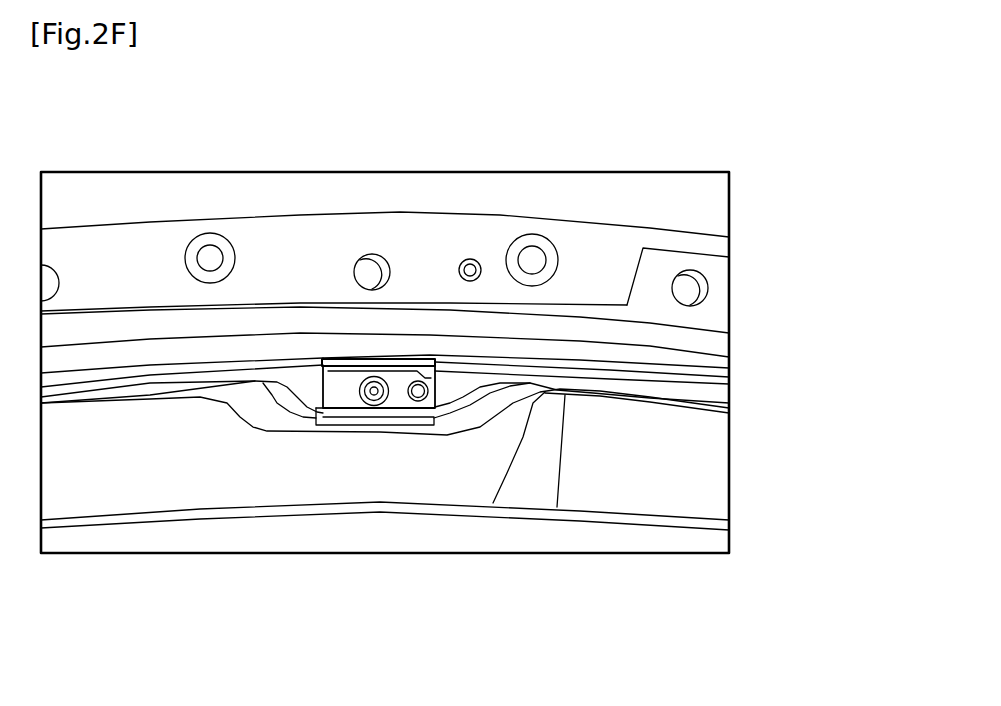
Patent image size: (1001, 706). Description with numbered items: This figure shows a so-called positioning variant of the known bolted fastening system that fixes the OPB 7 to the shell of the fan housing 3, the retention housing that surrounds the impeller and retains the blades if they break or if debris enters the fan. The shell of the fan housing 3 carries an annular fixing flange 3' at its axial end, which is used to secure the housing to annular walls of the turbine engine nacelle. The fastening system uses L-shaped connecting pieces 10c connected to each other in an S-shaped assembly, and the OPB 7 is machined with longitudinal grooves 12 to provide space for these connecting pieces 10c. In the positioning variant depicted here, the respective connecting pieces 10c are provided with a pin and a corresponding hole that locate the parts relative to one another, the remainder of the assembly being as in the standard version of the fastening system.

The L-shaped connecting piece 10c is at (348, 387).
The fan housing 3 is at (415, 362).
The annular fixing flange 3' is at (705, 232).
The OPB 7 is at (731, 463).
The longitudinal groove 12 is at (298, 404).